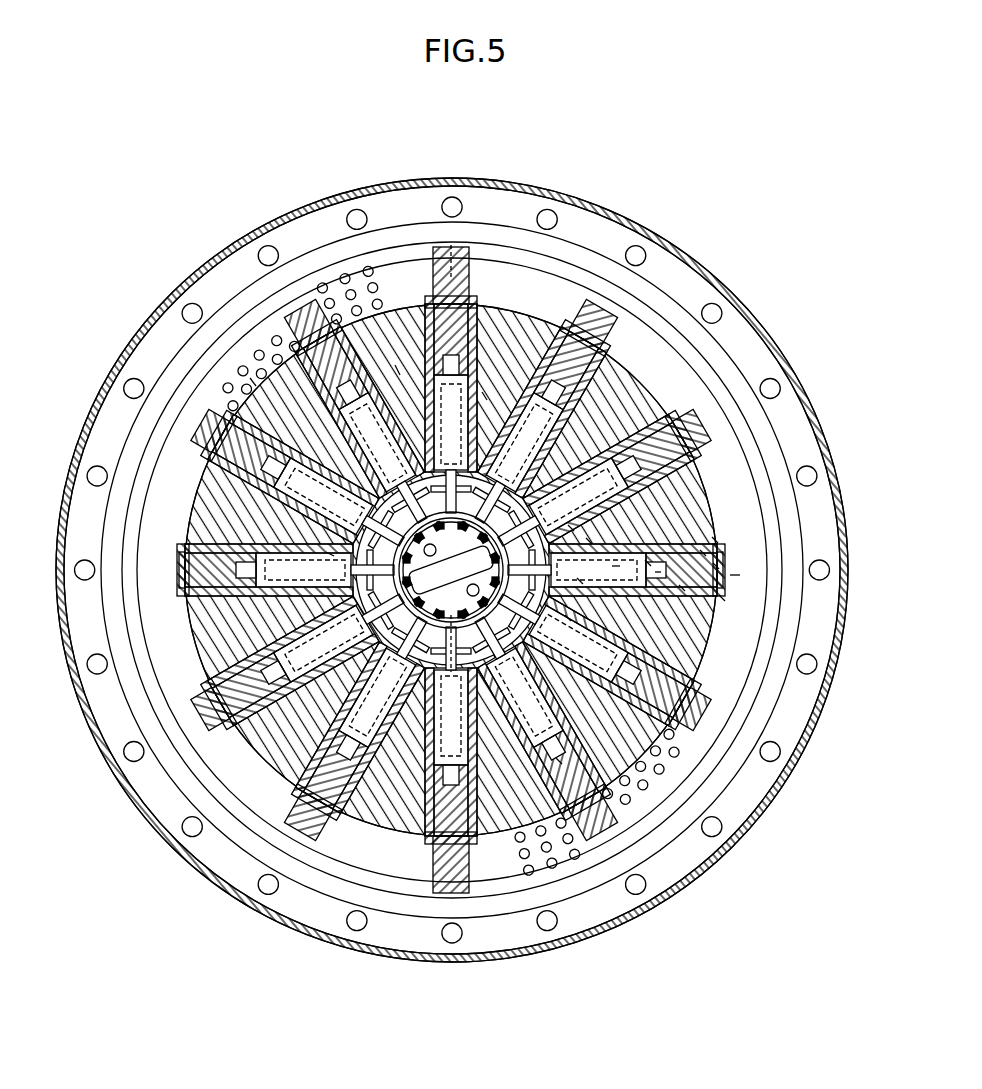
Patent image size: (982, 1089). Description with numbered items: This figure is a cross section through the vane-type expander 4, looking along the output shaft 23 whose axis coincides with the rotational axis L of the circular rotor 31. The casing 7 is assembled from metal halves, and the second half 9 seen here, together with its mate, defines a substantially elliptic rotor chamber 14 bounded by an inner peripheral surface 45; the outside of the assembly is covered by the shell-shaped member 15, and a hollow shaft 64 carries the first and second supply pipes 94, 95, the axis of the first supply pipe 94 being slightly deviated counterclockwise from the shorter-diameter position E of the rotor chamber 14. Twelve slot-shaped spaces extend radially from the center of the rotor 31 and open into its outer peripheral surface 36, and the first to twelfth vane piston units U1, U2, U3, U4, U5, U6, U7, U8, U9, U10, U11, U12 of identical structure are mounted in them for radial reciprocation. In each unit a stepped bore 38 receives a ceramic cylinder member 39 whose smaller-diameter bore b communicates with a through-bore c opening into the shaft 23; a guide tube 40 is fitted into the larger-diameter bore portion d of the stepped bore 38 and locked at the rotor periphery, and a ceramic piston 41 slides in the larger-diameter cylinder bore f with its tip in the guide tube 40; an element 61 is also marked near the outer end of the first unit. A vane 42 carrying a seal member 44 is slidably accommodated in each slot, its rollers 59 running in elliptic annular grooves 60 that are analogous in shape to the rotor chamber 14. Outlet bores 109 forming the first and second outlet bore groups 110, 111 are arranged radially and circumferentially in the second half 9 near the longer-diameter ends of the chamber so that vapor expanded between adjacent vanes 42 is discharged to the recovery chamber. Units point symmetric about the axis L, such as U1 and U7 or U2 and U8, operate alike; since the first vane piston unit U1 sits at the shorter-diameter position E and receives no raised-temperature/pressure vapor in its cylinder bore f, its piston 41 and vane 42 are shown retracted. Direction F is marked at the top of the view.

The housing 4 is at (683, 232).
The casing 7 is at (733, 292).
The second half 9 is at (635, 222).
The rotor chamber 14 is at (547, 292).
The shell-shaped member 15 is at (228, 245).
The output shaft 23 is at (440, 500).
The rotor 31 is at (722, 598).
The outer peripheral surface 36 is at (637, 360).
The stepped bore 38 is at (572, 528).
The cylinder member 39 is at (590, 540).
The guide tube 40 is at (703, 553).
The piston 41 is at (580, 582).
The vane 42 is at (682, 588).
The seal member 44 is at (715, 540).
The inner peripheral surface 45 is at (522, 285).
The roller 59 is at (390, 353).
The annular groove 60 is at (484, 395).
The plug 61 is at (716, 566).
The hollow shaft 64 is at (252, 382).
The first supply pipe 94 is at (560, 760).
The second supply pipe 95 is at (330, 555).
The outlet bore 109 is at (312, 322).
The first outlet bore group 110 is at (283, 338).
The second outlet bore group 111 is at (643, 798).
The first vane piston unit U1 is at (727, 578).
The second vane piston unit U2 is at (697, 417).
The third vane piston unit U3 is at (616, 308).
The fourth vane piston unit U4 is at (428, 272).
The fifth vane piston unit U5 is at (300, 300).
The sixth vane piston unit U6 is at (205, 435).
The seventh vane piston unit U7 is at (178, 568).
The eighth vane piston unit U8 is at (215, 705).
The ninth vane piston unit U9 is at (292, 805).
The tenth vane piston unit U10 is at (430, 875).
The eleventh vane piston unit U11 is at (608, 840).
The twelfth vane piston unit U12 is at (700, 710).
The shorter-diameter position E is at (776, 592).
The direction F is at (466, 167).
The rotational axis L is at (462, 707).
The smaller-diameter bore b is at (606, 569).
The through-bore c is at (560, 633).
The larger-diameter bore portion d is at (658, 575).
The larger-diameter cylinder bore f is at (648, 563).